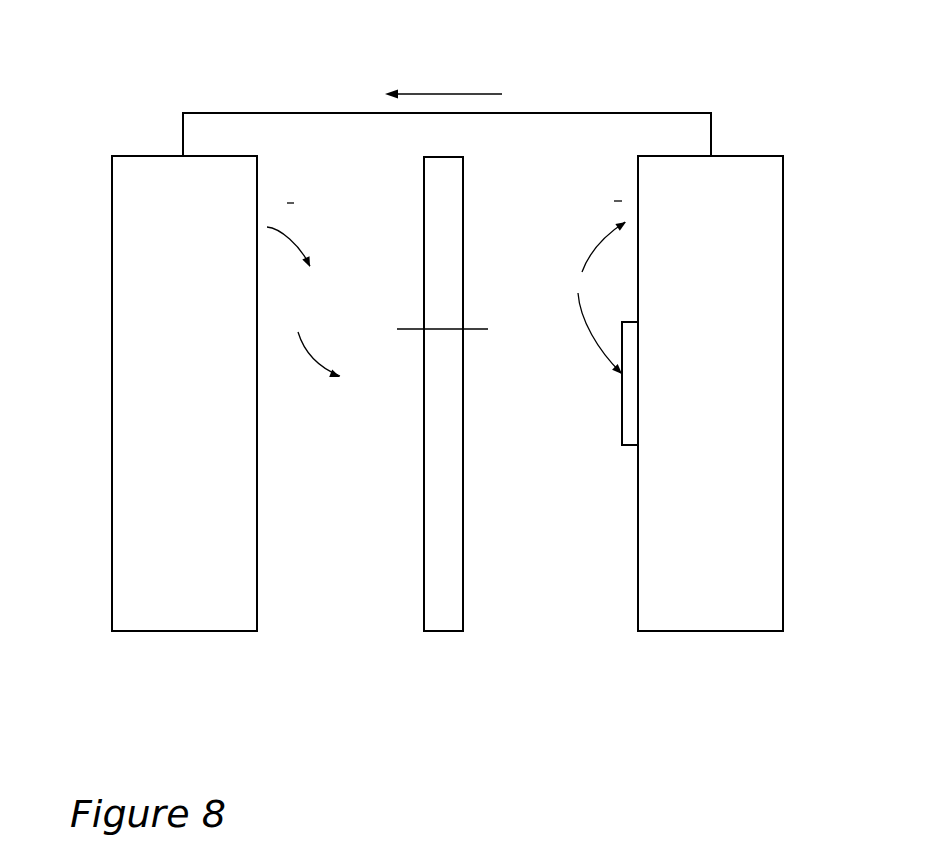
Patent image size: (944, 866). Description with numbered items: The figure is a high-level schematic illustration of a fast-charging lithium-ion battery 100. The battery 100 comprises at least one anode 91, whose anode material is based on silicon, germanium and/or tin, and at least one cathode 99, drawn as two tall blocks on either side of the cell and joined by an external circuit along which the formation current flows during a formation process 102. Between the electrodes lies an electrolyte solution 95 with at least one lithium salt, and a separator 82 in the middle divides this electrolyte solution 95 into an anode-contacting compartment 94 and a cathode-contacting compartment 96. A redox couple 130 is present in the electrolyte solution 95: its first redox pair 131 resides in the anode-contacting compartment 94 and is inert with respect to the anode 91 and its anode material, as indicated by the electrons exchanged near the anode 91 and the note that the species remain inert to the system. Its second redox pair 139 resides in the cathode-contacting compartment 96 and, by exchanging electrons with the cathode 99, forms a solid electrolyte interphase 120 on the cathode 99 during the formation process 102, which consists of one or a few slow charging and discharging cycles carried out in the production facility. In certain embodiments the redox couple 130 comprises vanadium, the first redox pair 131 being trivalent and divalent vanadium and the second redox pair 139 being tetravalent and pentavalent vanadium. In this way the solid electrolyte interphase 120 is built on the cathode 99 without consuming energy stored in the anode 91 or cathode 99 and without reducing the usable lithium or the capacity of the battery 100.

The fast-charging lithium-ion battery 100 is at (130, 44).
The formation process 102 is at (600, 113).
The anode 91 is at (111, 181).
The cathode 99 is at (784, 198).
The separator 82 is at (424, 226).
The electrolyte solution 95 is at (365, 172).
The anode-contacting compartment 94 is at (318, 622).
The cathode-contacting compartment 96 is at (570, 622).
The solid electrolyte interphase (SEI) 120 is at (622, 446).
The redox couple 130 is at (503, 337).
The first redox pair 131 is at (342, 306).
The second redox pair 139 is at (556, 296).